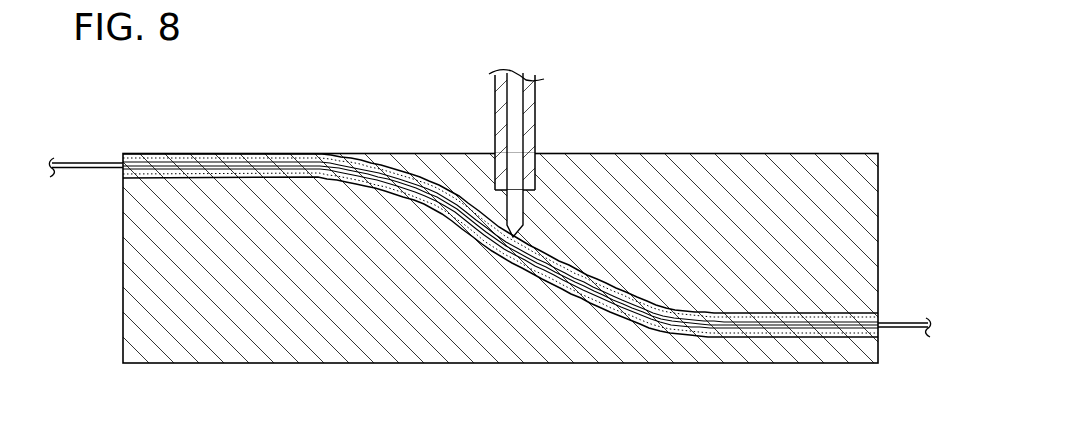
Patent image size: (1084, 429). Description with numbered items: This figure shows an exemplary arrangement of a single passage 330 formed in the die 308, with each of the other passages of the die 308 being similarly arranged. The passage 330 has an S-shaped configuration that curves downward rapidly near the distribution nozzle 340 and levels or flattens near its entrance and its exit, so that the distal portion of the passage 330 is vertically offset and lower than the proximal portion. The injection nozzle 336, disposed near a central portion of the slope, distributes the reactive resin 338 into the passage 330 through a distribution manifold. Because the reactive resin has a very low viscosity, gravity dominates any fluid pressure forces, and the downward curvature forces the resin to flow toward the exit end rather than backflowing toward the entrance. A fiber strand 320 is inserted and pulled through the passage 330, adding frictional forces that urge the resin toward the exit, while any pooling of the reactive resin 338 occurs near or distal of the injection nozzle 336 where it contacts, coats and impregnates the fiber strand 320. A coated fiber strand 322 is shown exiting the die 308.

The die 308 is at (747, 158).
The fiber strand 320 is at (88, 164).
The coated fiber strand 322 is at (904, 323).
The passage 330 is at (173, 178).
The injection nozzle 336 is at (506, 110).
The reactive resin 338 is at (648, 318).
The distribution nozzle 340 is at (522, 227).